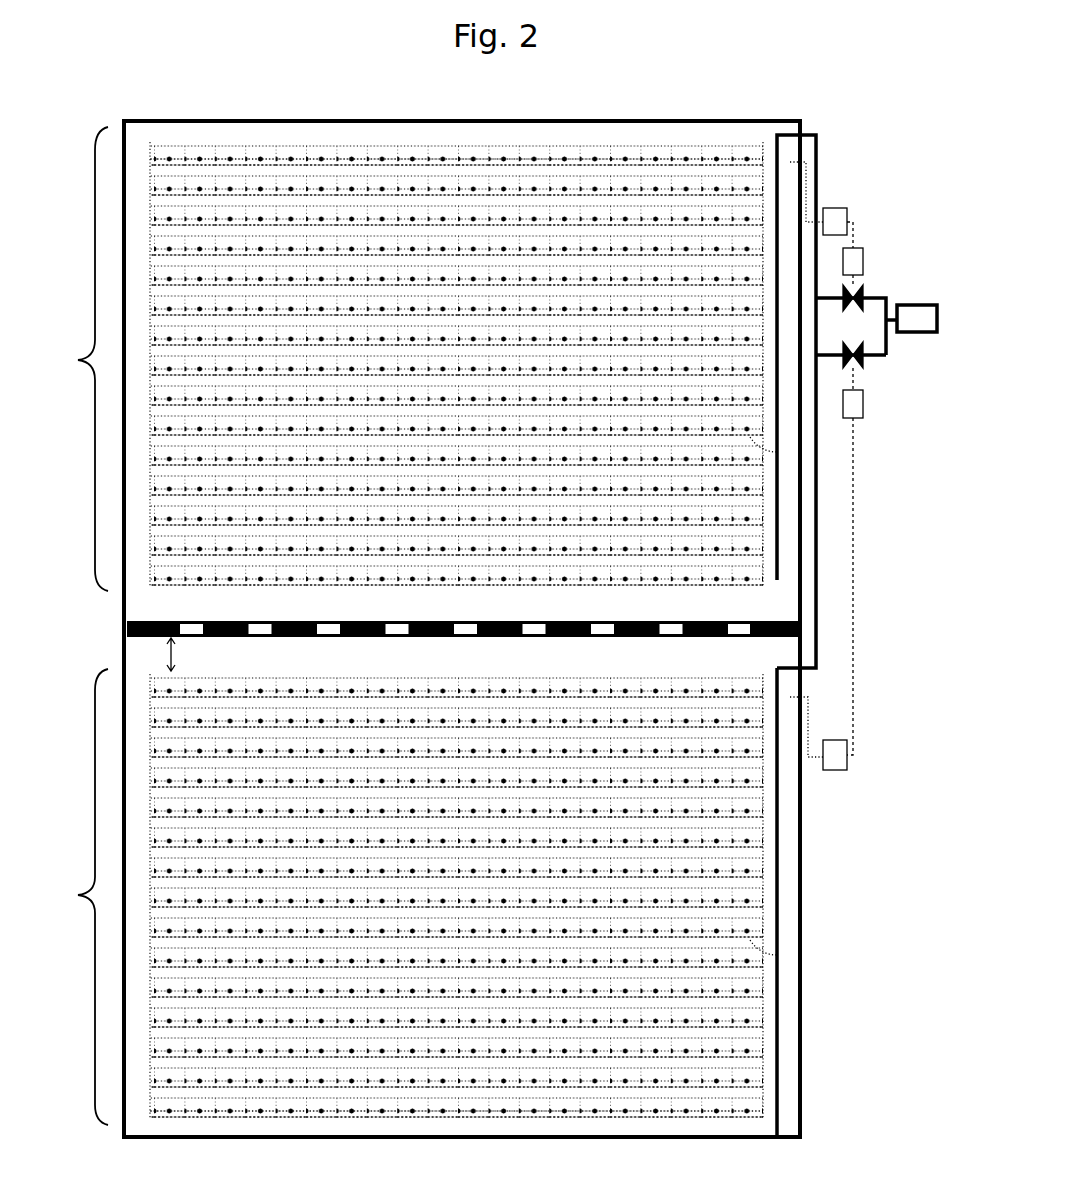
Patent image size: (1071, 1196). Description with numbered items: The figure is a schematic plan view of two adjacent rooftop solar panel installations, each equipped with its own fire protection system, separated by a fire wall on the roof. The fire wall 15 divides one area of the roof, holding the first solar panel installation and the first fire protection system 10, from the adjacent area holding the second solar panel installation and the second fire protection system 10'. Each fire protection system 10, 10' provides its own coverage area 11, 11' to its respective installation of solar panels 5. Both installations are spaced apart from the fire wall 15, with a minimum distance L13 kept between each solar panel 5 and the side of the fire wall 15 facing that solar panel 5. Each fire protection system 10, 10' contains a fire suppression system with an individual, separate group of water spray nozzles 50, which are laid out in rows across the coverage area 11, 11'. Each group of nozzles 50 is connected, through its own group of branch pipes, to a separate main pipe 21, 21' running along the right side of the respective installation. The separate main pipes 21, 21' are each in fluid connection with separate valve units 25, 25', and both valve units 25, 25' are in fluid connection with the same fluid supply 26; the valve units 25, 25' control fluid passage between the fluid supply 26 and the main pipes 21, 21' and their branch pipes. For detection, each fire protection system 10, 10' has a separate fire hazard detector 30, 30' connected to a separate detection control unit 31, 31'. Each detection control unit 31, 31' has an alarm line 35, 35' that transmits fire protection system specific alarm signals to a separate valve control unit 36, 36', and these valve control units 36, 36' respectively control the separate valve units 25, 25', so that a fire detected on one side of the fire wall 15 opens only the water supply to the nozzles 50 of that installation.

The solar panel 5 is at (682, 152).
The first fire protection system 10 is at (78, 359).
The second fire protection system 10' is at (76, 897).
The coverage area 11 is at (408, 367).
The coverage area 11' is at (404, 899).
The fire wall 15 is at (127, 620).
The minimum distance L13 is at (175, 655).
The main pipe 21 is at (839, 376).
The main pipe 21' is at (852, 875).
The valve unit 25 is at (873, 311).
The valve unit 25' is at (871, 366).
The fluid supply 26 is at (925, 333).
The fire hazard detector 30 is at (800, 458).
The fire hazard detector 30' is at (802, 961).
The detection control unit 31 is at (827, 190).
The detection control unit 31' is at (822, 773).
The alarm line 35 is at (876, 200).
The alarm line 35' is at (885, 586).
The valve control unit 36 is at (879, 239).
The valve control unit 36' is at (877, 412).
The water spray nozzle 50 is at (565, 156).